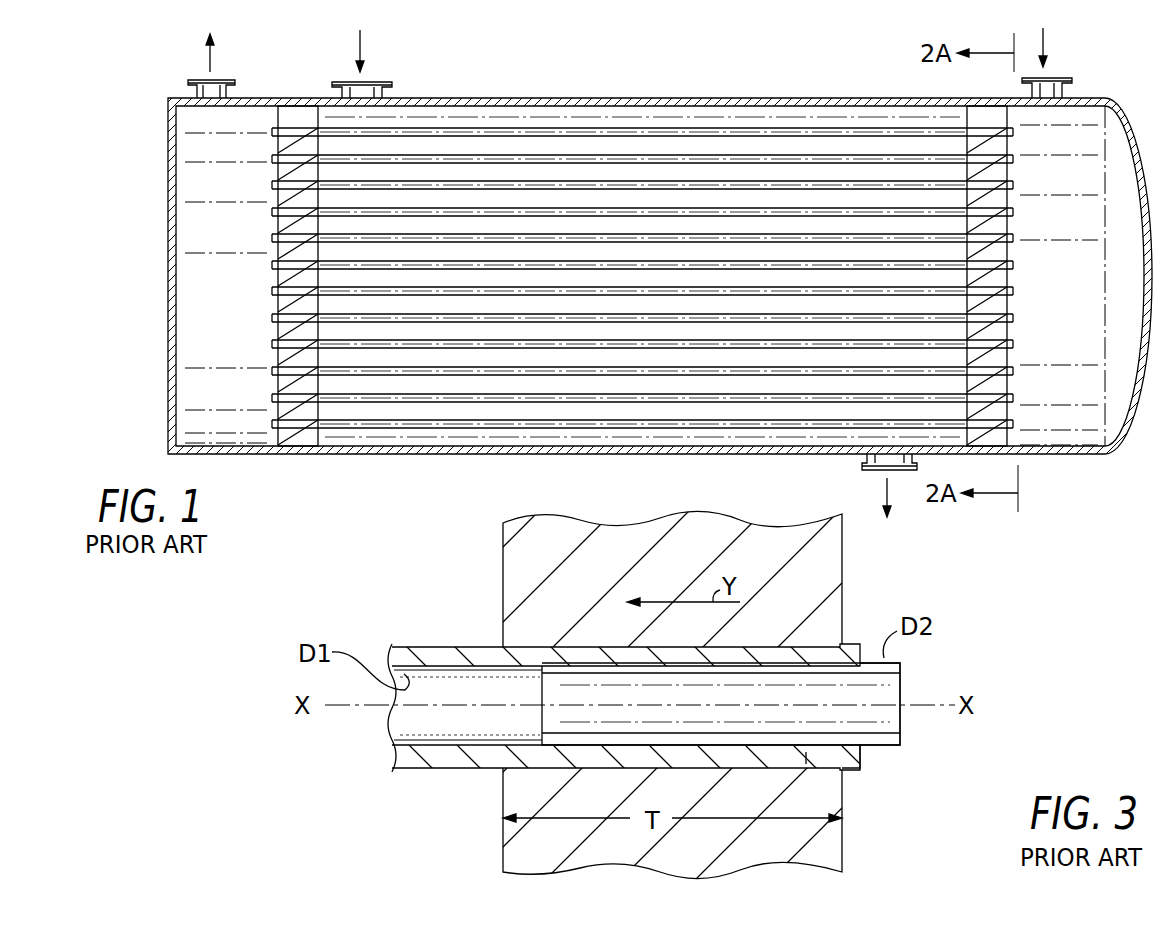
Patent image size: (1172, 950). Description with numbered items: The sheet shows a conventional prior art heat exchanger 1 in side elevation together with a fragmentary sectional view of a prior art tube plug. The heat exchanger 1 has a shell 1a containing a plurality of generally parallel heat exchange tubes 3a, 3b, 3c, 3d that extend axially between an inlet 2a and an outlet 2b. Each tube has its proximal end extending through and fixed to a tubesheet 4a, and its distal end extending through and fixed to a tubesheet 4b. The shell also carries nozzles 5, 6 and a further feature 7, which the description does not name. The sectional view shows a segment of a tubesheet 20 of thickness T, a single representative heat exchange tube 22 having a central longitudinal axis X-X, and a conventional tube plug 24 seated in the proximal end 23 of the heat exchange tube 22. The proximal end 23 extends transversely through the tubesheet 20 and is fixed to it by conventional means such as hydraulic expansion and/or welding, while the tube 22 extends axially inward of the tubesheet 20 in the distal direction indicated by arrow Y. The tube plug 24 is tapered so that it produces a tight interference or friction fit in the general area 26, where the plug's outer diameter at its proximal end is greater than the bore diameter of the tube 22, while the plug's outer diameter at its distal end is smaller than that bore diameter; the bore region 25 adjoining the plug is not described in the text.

In FIG. 1, the heat exchanger 1 is at (752, 56).
In FIG. 1, the shell 1a is at (832, 96).
In FIG. 1, the inlet 2a is at (1048, 78).
In FIG. 1, the outlet 2b is at (220, 80).
In FIG. 1, the heat exchange tube 3a is at (655, 130).
In FIG. 1, the heat exchange tube 3b is at (601, 153).
In FIG. 1, the heat exchange tube 3c is at (528, 182).
In FIG. 1, the heat exchange tube 3d is at (452, 208).
In FIG. 1, the tubesheet 4a is at (1003, 228).
In FIG. 1, the tubesheet 4b is at (280, 172).
In FIG. 1, the shell-side inlet nozzle 5 is at (376, 82).
In FIG. 1, the shell-side outlet nozzle 6 is at (868, 462).
In FIG. 1, the shell-side flow passage 7 is at (770, 118).
In FIG. 3, the tubesheet 20 is at (822, 576).
In FIG. 3, the heat exchange tube 22 is at (412, 652).
In FIG. 3, the proximal end 23 is at (808, 758).
In FIG. 3, the tube plug 24 is at (900, 722).
In FIG. 3, the tube inner surface 25 is at (542, 707).
In FIG. 3, the general area 26 is at (868, 695).